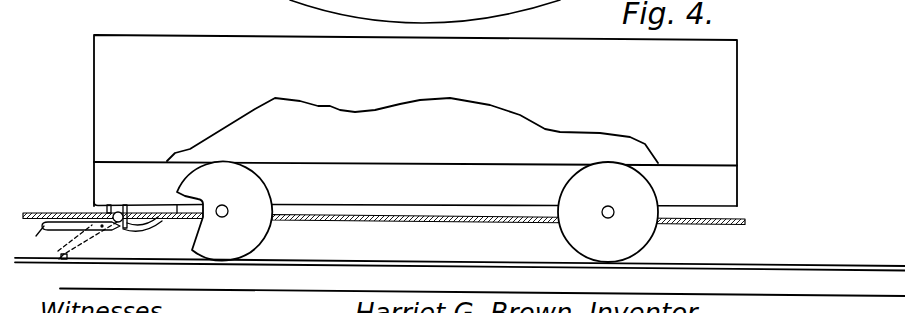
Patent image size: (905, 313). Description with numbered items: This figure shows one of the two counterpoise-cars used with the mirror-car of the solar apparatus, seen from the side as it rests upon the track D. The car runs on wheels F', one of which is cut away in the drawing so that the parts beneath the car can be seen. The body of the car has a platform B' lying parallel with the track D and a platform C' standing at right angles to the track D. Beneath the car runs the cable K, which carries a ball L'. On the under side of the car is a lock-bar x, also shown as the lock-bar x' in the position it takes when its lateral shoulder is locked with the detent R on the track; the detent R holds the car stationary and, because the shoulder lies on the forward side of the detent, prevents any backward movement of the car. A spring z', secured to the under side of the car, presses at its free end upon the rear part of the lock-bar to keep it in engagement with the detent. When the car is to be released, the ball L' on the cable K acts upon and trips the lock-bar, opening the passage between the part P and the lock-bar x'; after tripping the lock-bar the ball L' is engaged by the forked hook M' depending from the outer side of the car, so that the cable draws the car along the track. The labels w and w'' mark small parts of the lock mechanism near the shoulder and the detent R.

The platform B' is at (415, 124).
The platform C' is at (412, 115).
The cable K is at (390, 221).
The wheels F' is at (417, 212).
The passage member P is at (109, 205).
The forked hook M' is at (138, 203).
The spring z' is at (145, 232).
The ball L' is at (112, 234).
The lock-bar x is at (81, 211).
The shoe end w is at (26, 238).
The lock-bar x' is at (87, 237).
The detent R is at (67, 262).
The stop w'' is at (49, 273).
The track D is at (460, 277).